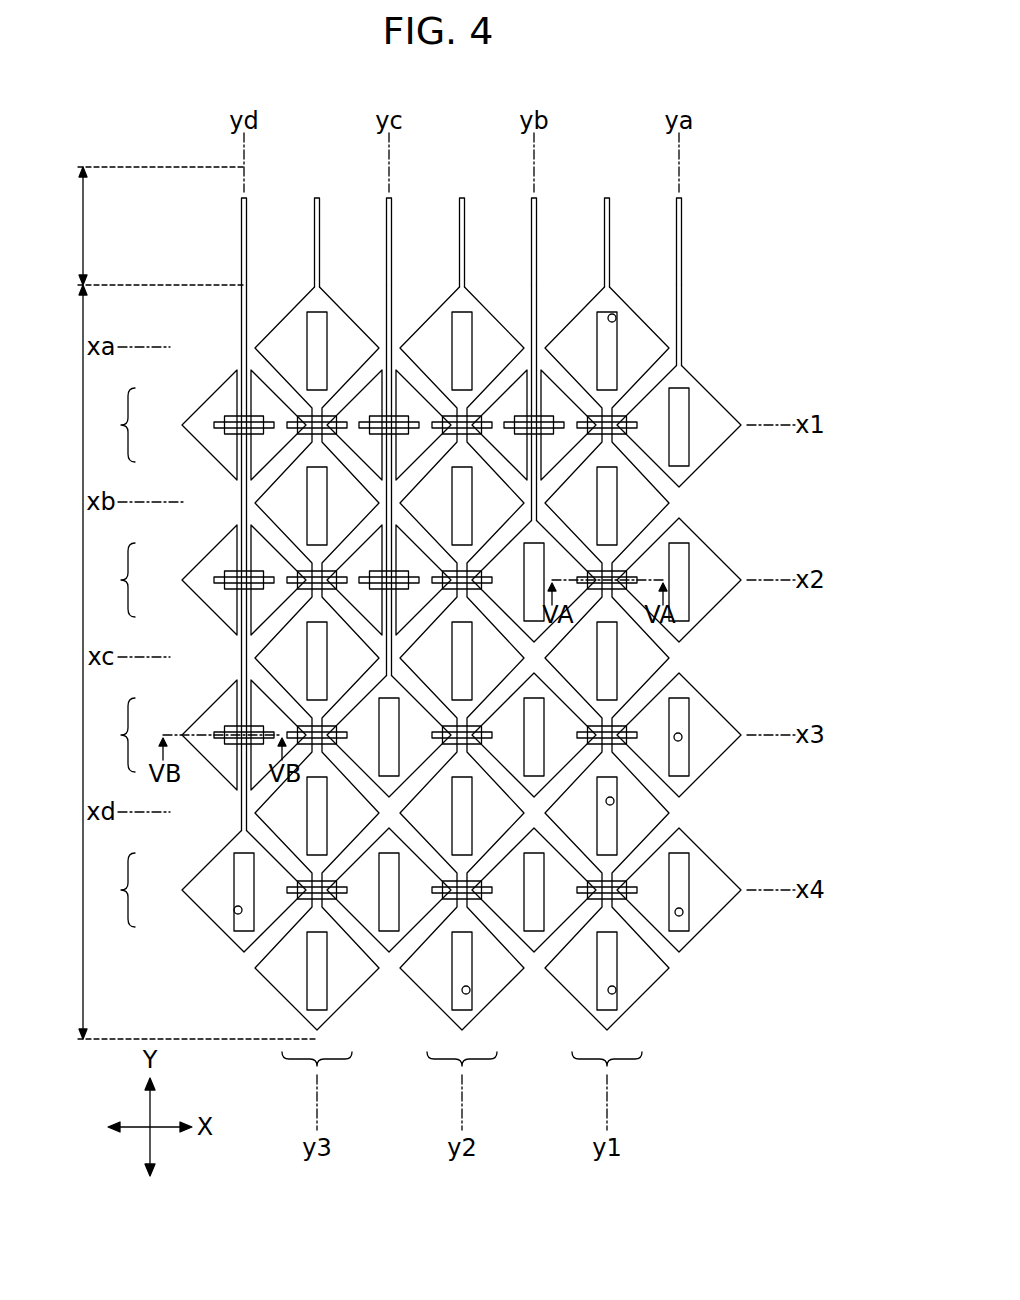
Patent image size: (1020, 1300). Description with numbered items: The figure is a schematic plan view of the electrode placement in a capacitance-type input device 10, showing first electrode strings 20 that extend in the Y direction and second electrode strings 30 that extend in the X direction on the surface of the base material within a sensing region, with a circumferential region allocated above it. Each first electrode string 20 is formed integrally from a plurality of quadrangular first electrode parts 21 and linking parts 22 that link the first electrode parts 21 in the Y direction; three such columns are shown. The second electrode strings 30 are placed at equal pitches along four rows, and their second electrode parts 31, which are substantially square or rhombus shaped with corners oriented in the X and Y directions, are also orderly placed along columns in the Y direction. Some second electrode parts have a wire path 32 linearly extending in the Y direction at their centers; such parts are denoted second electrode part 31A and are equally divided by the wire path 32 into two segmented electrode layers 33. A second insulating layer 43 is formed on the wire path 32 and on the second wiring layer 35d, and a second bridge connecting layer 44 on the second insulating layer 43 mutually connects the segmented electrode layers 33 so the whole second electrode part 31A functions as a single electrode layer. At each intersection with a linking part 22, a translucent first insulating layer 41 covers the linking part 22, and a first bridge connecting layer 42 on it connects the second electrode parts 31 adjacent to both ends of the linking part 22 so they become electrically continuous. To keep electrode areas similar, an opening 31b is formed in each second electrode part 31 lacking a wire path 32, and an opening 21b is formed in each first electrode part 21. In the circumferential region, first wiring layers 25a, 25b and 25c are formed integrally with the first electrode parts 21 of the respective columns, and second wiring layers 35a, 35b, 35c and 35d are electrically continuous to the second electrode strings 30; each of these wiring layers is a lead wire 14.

The input device 10 is at (738, 238).
The lead wire 14 is at (511, 208).
The first electrode string 20 is at (317, 1066).
The first electrode part 21 is at (297, 313).
The opening 21b is at (612, 318).
The linking part 22 is at (318, 400).
The first wiring layer 25a is at (611, 226).
The first wiring layer 25b is at (466, 226).
The first wiring layer 25c is at (321, 226).
The second electrode string 30 is at (111, 657).
The second electrode part 31 is at (720, 432).
The second electrode part having wire path 31A is at (225, 447).
The opening 31b is at (678, 737).
The wire path 32 is at (242, 363).
The segmented electrode layer 33 is at (227, 418).
The second wiring layer 35a is at (682, 218).
The second wiring layer 35b is at (537, 218).
The second wiring layer 35c is at (392, 218).
The second wiring layer 35d is at (247, 218).
The first insulating layer 41 is at (633, 413).
The first bridge connecting layer 42 is at (640, 420).
The second insulating layer 43 is at (217, 418).
The second bridge connecting layer 44 is at (216, 428).